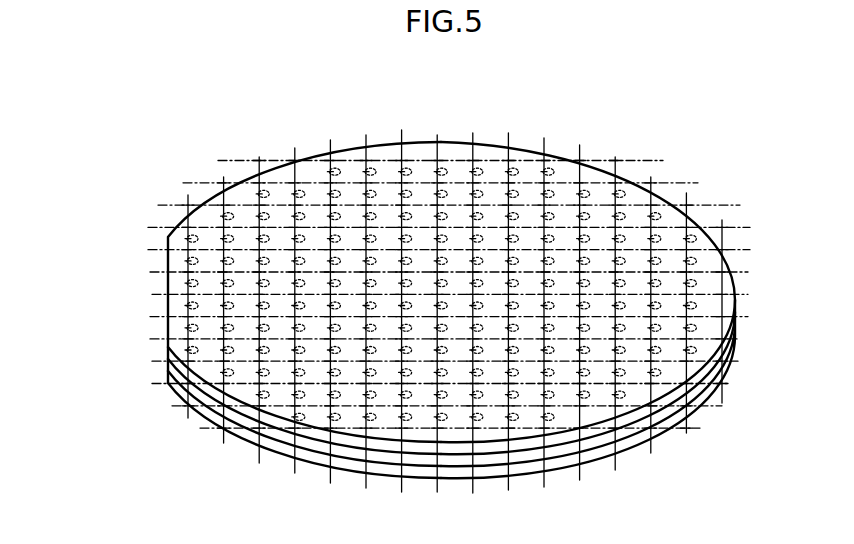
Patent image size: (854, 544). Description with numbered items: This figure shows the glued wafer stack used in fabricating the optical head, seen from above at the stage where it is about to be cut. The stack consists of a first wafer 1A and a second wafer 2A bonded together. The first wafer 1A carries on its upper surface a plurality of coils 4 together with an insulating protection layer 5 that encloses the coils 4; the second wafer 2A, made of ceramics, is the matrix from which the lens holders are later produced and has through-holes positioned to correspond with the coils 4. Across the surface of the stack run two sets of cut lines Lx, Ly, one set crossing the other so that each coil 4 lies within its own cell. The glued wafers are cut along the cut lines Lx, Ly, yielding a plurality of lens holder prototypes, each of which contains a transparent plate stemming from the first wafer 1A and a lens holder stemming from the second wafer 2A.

The first wafer 1A is at (218, 427).
The second wafer 2A is at (252, 434).
The coil 4 is at (262, 172).
The insulating protection layer 5 is at (176, 393).
The cut line Lx is at (158, 271).
The cut line Ly is at (407, 147).